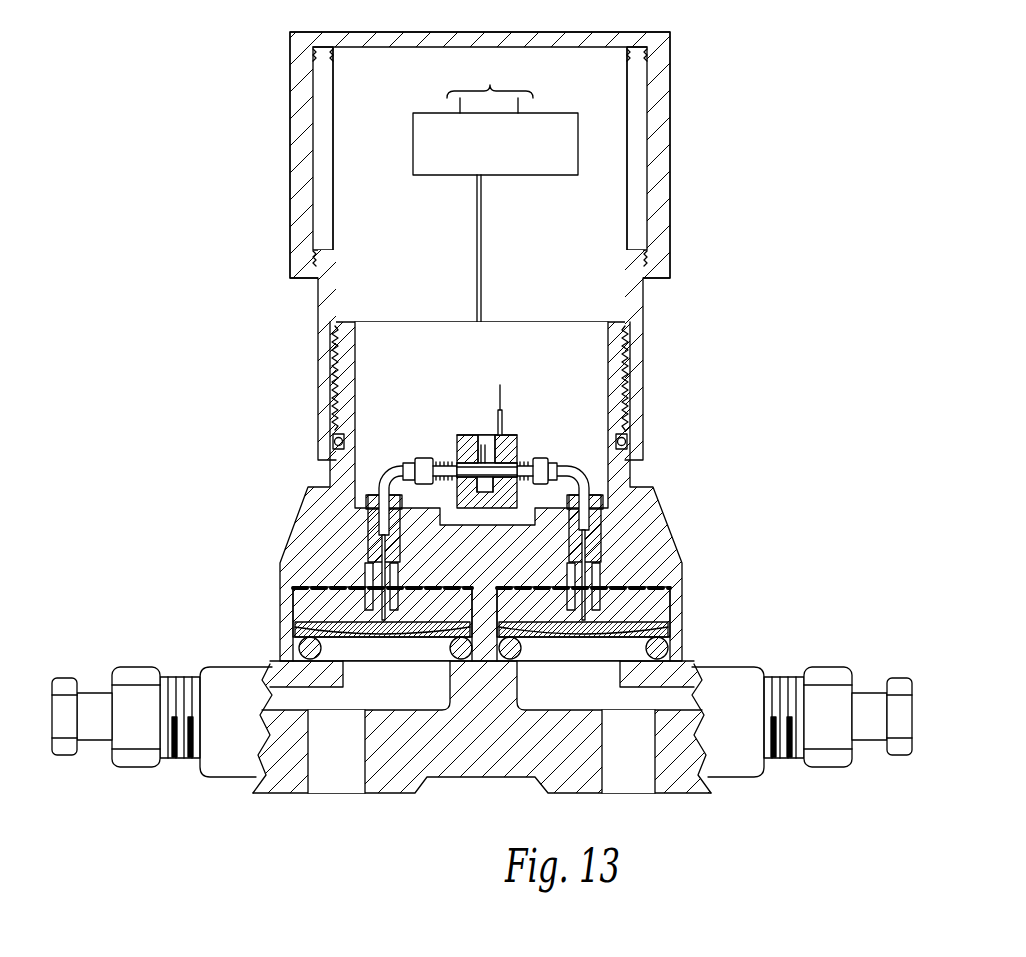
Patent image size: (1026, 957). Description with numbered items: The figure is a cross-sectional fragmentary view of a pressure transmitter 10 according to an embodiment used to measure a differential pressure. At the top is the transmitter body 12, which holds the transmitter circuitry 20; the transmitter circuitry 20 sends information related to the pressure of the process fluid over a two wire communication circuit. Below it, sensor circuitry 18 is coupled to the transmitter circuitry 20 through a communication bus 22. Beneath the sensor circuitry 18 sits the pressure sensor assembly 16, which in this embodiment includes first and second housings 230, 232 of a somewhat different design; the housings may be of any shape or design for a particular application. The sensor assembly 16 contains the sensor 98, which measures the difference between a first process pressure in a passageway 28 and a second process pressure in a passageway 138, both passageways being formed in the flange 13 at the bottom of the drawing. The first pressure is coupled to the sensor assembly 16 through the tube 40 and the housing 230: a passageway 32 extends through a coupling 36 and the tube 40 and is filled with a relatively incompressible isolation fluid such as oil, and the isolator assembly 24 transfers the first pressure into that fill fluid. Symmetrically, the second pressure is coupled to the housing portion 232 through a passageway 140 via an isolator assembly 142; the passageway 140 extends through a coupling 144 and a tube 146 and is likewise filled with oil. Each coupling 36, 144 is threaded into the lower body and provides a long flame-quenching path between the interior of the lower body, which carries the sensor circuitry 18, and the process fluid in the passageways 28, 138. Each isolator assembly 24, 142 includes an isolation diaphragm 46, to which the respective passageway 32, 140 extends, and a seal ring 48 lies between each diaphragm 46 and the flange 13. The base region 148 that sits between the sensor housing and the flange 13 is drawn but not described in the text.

The pressure transmitter 10 is at (541, 246).
The transmitter body 12 is at (670, 107).
The flange 13 is at (482, 736).
The pressure sensor assembly 16 is at (480, 446).
The sensor circuitry 18 is at (568, 361).
The transmitter circuitry 20 is at (578, 163).
The communication bus 22 is at (482, 236).
The isolator assembly 24 is at (296, 603).
The passageway 28 is at (352, 725).
The passageway 32 is at (382, 543).
The coupling 36 is at (367, 516).
The tube 40 is at (391, 479).
The isolation diaphragm 46 is at (297, 631).
The seal ring 48 is at (297, 651).
The sensor 98 is at (485, 436).
The passageway 138 is at (648, 730).
The passageway 140 is at (588, 537).
The isolator assembly 142 is at (670, 610).
The coupling 144 is at (602, 558).
The tube 146 is at (562, 474).
The transmitter base 148 is at (276, 569).
The first housing 230 is at (455, 441).
The second housing 232 is at (512, 437).